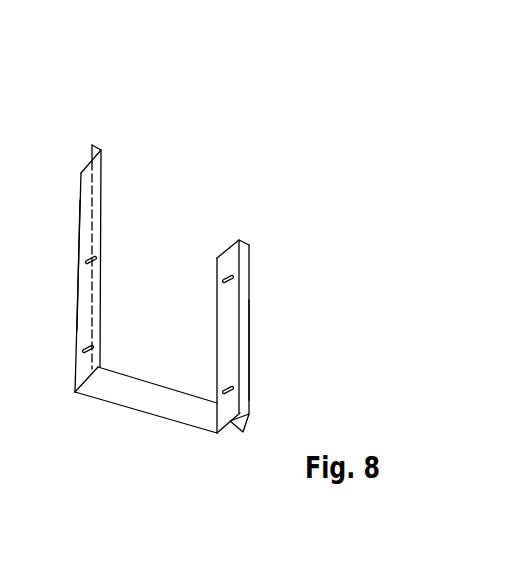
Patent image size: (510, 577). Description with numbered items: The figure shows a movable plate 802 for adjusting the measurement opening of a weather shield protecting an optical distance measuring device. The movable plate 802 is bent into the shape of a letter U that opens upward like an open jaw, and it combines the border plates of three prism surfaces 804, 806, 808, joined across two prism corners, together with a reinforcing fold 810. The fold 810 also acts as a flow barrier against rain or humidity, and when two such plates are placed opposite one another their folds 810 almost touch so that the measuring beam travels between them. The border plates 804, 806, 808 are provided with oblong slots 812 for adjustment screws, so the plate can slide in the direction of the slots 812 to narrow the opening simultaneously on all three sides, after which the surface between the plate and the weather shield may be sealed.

The movable plate 802 is at (75, 120).
The border plate of first prism surface 804 is at (102, 205).
The border plate of second prism surface 806 is at (215, 353).
The border plate of third prism surface 808 is at (143, 412).
The reinforcing fold 810 is at (78, 310).
The oblong slot 812 is at (97, 259).